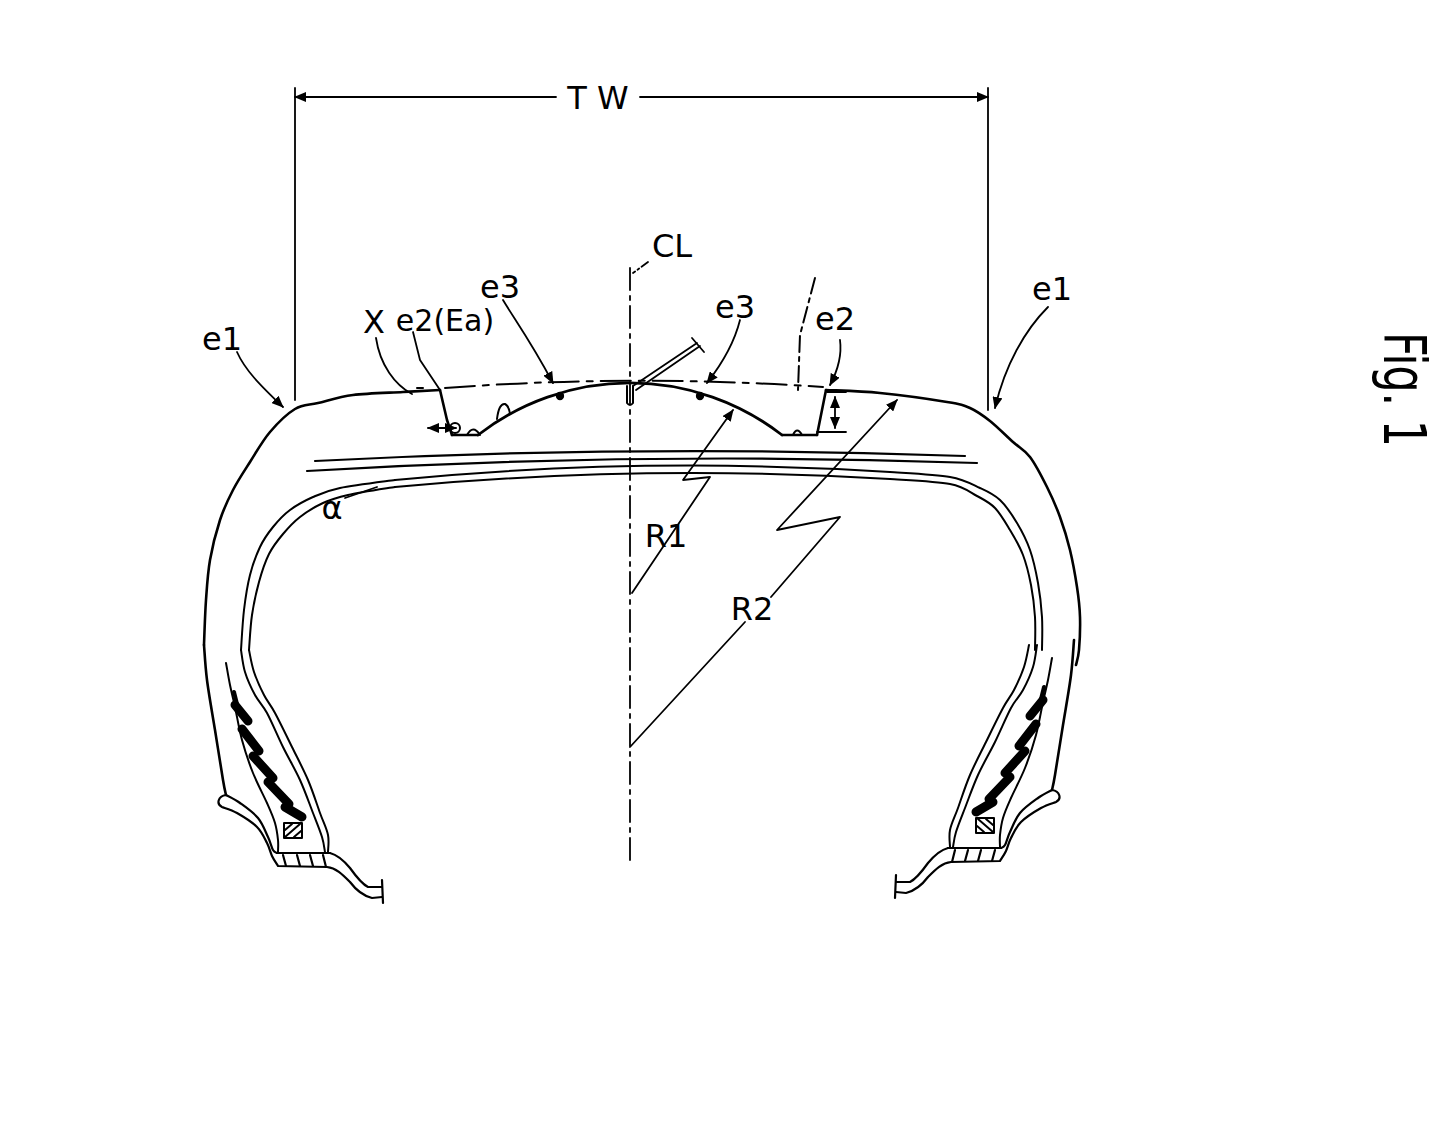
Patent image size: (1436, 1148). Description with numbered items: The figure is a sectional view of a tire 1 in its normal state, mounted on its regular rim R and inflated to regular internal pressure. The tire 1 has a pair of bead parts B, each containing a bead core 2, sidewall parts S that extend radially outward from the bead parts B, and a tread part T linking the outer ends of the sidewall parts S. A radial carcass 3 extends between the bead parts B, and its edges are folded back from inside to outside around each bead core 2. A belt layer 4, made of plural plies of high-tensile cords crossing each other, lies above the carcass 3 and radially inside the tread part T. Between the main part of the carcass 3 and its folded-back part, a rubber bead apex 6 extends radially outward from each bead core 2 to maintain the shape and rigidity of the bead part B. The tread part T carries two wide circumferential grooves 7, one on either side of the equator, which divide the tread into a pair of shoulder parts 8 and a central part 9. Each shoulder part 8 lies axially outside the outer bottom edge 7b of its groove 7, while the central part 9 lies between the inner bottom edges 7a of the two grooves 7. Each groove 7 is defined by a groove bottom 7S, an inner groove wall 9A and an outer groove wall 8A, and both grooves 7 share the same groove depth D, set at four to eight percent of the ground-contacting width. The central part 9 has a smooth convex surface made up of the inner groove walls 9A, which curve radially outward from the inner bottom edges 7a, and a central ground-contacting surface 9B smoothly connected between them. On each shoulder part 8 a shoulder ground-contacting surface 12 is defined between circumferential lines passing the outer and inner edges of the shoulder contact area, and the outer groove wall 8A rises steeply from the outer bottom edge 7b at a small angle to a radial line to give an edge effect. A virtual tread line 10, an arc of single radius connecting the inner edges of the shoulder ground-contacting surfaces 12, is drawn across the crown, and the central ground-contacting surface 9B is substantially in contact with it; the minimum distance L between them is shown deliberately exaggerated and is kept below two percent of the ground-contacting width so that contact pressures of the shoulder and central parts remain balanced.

The tire 1 is at (1145, 426).
The bead core 2 is at (997, 833).
The radial carcass 3 is at (1047, 598).
The belt layer 4 is at (967, 457).
The bead apex 6 is at (1047, 720).
The circumferential groove 7 is at (500, 327).
The inner bottom edge 7a is at (488, 437).
The outer bottom edge 7b is at (455, 440).
The groove bottom 7S is at (817, 437).
The shoulder part 8 is at (358, 395).
The outer groove wall 8A is at (453, 437).
The central part 9 is at (575, 385).
The inner groove wall 9A is at (501, 421).
The central ground-contacting surface 9B is at (560, 394).
The virtual tread line 10 is at (810, 428).
The shoulder ground-contacting surface 12 is at (373, 395).
The minimum distance L is at (697, 338).
The tread part T is at (762, 290).
The groove depth D is at (847, 413).
The sidewall part S is at (1075, 532).
The bead part B is at (1058, 774).
The regular rim R is at (928, 875).